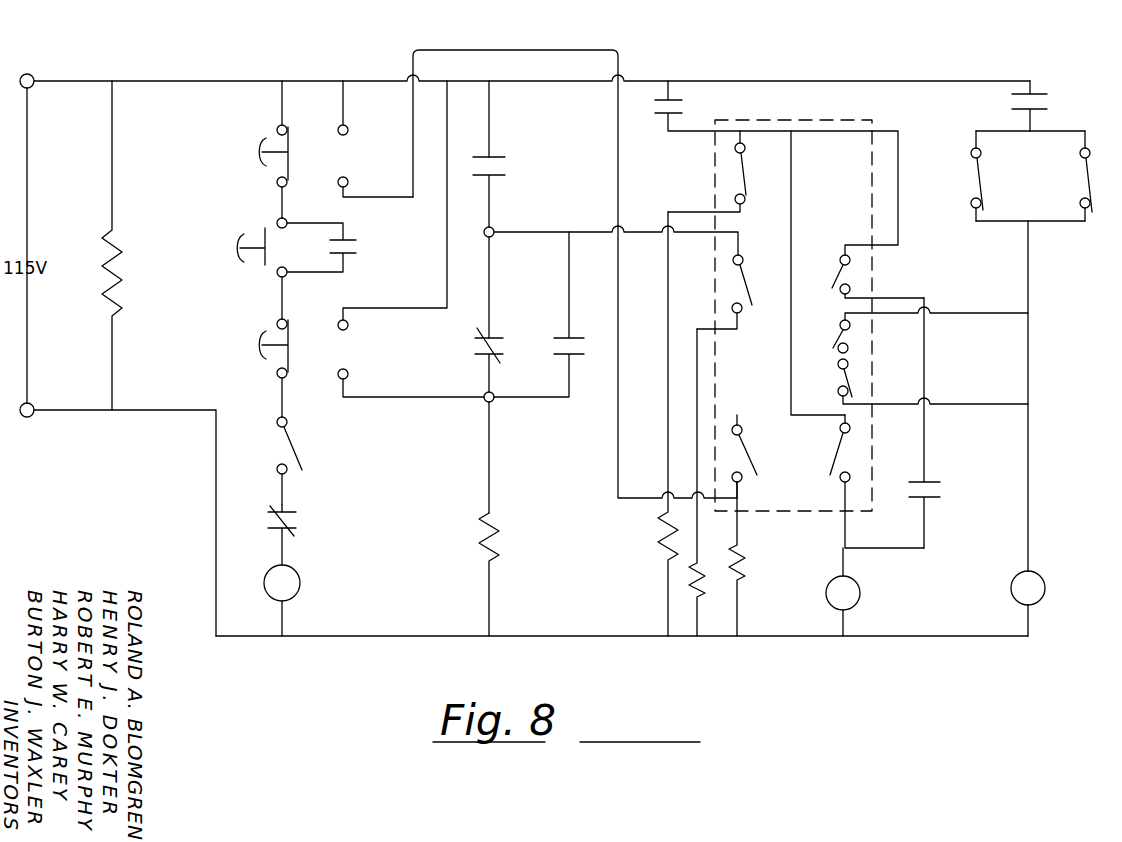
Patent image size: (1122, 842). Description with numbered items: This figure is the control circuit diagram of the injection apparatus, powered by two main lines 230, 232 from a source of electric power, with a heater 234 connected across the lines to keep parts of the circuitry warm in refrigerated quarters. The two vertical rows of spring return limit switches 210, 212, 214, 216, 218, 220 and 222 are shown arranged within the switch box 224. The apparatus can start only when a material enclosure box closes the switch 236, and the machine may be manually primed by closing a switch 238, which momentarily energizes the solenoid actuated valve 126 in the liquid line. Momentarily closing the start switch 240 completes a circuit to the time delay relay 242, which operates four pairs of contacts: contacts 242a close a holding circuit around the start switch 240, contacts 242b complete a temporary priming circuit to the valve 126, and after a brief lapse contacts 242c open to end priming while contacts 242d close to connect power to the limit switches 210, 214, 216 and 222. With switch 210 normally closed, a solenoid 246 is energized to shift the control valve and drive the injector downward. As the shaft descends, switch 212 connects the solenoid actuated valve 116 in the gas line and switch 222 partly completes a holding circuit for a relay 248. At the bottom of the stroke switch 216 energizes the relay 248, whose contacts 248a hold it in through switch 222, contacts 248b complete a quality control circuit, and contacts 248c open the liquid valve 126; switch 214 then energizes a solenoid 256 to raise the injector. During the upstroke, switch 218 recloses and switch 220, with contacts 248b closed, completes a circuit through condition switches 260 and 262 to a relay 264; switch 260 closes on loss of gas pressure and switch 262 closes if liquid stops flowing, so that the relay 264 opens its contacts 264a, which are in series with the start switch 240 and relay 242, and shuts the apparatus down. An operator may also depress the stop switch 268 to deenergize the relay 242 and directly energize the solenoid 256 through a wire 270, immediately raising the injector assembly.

The solenoid valve 116 is at (700, 580).
The solenoid valve 126 is at (482, 540).
The limit switch 210 is at (747, 172).
The limit switch 212 is at (748, 285).
The limit switch 214 is at (748, 447).
The limit switch 216 is at (831, 467).
The limit switch 218 is at (846, 378).
The limit switch 220 is at (832, 338).
The limit switch 222 is at (832, 276).
The switch box 224 is at (795, 118).
The main line 230 is at (135, 80).
The main line 232 is at (350, 637).
The heater 234 is at (122, 292).
The switch 236 is at (303, 462).
The switch 238 is at (260, 345).
The start switch 240 is at (240, 246).
The time delay relay 242 is at (300, 584).
The contacts 242a is at (346, 240).
The contacts 242b is at (496, 160).
The contacts 242c is at (492, 334).
The contacts 242d is at (672, 116).
The solenoid 246 is at (668, 540).
The relay 248 is at (860, 594).
The contacts 248a is at (928, 484).
The contacts 248b is at (1036, 96).
The contacts 248c is at (562, 360).
The solenoid 256 is at (752, 568).
The condition switch 260 is at (980, 190).
The condition switch 262 is at (1086, 178).
The relay 264 is at (1045, 580).
The contacts 264a is at (292, 510).
The stop switch 268 is at (260, 152).
The wire 270 is at (487, 50).